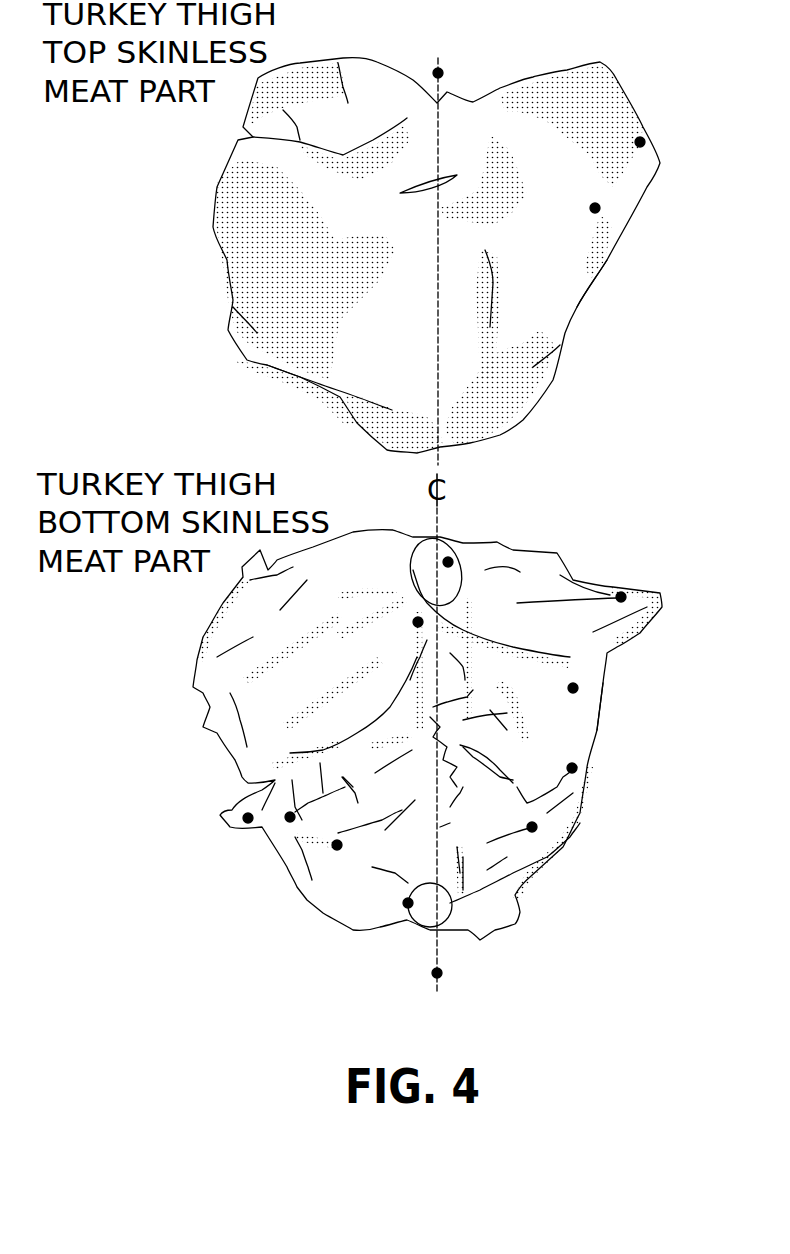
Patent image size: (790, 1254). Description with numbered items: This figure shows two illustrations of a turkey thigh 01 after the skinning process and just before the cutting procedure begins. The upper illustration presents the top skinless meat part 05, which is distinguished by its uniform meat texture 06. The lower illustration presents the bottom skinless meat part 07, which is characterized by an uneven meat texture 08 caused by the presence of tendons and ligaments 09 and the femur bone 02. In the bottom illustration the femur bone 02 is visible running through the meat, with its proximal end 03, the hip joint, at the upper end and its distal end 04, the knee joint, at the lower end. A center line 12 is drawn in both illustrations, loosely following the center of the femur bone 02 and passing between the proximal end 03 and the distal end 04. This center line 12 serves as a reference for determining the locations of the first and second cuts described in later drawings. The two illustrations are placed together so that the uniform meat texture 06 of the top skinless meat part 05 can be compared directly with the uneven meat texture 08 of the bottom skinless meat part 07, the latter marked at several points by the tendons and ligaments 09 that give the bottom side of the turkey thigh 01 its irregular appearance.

The turkey thigh 01 is at (645, 138).
The femur bone 02 is at (413, 625).
The proximal end 03 is at (452, 558).
The distal end 04 is at (406, 908).
The top skinless meat part 05 is at (600, 212).
The uniform meat texture 06 is at (633, 283).
The bottom skinless meat part 07 is at (579, 689).
The uneven meat texture 08 is at (630, 717).
The tendons and ligaments 09 is at (248, 822).
The center line 12 is at (442, 69).